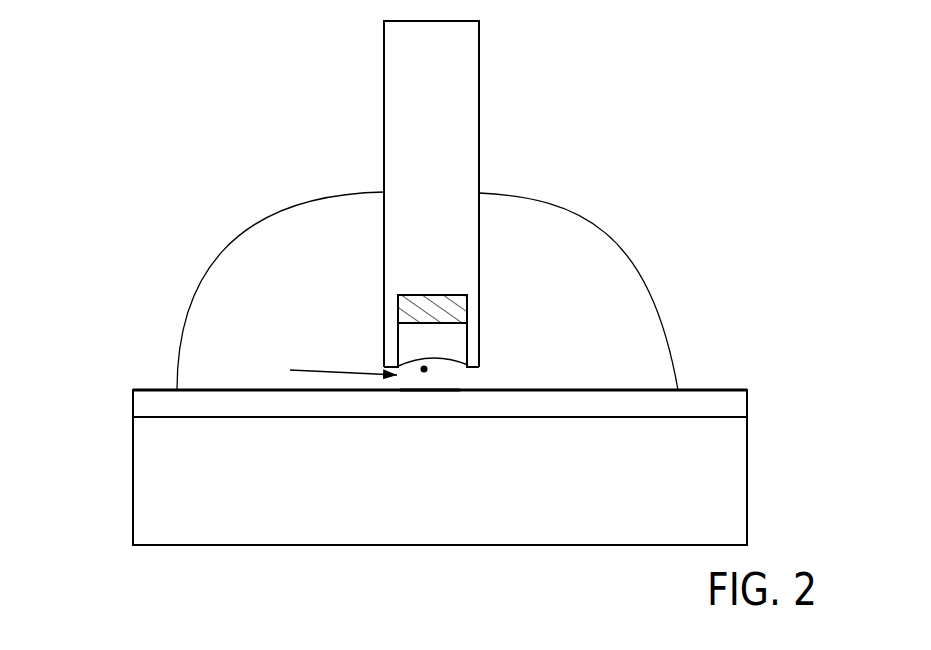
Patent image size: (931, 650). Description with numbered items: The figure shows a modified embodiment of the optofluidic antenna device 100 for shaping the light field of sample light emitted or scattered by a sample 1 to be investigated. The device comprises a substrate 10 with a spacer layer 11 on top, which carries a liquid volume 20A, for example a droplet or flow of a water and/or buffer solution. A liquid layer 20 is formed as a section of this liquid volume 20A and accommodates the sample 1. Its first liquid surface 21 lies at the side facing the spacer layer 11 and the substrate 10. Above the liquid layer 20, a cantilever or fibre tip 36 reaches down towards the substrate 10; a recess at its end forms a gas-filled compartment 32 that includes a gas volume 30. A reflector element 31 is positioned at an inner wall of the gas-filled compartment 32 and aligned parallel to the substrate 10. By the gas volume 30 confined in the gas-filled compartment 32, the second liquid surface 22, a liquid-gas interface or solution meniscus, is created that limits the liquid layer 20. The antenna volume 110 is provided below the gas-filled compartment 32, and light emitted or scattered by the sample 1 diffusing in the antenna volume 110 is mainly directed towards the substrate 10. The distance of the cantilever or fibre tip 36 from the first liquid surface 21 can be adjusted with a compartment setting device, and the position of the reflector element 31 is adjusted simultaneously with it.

The optofluidic antenna device 100 is at (225, 107).
The substrate 10 is at (145, 497).
The spacer layer 11 is at (145, 398).
The liquid volume 20A is at (318, 230).
The cantilever or fibre tip 36 is at (447, 158).
The reflector element 31 is at (470, 297).
The gas volume 30 is at (368, 324).
The gas-filled compartment 32 is at (426, 342).
The liquid layer 20 is at (446, 395).
The second liquid surface 22 is at (417, 357).
The first liquid surface 21 is at (420, 388).
The sample 1 is at (427, 371).
The antenna volume 110 is at (320, 364).